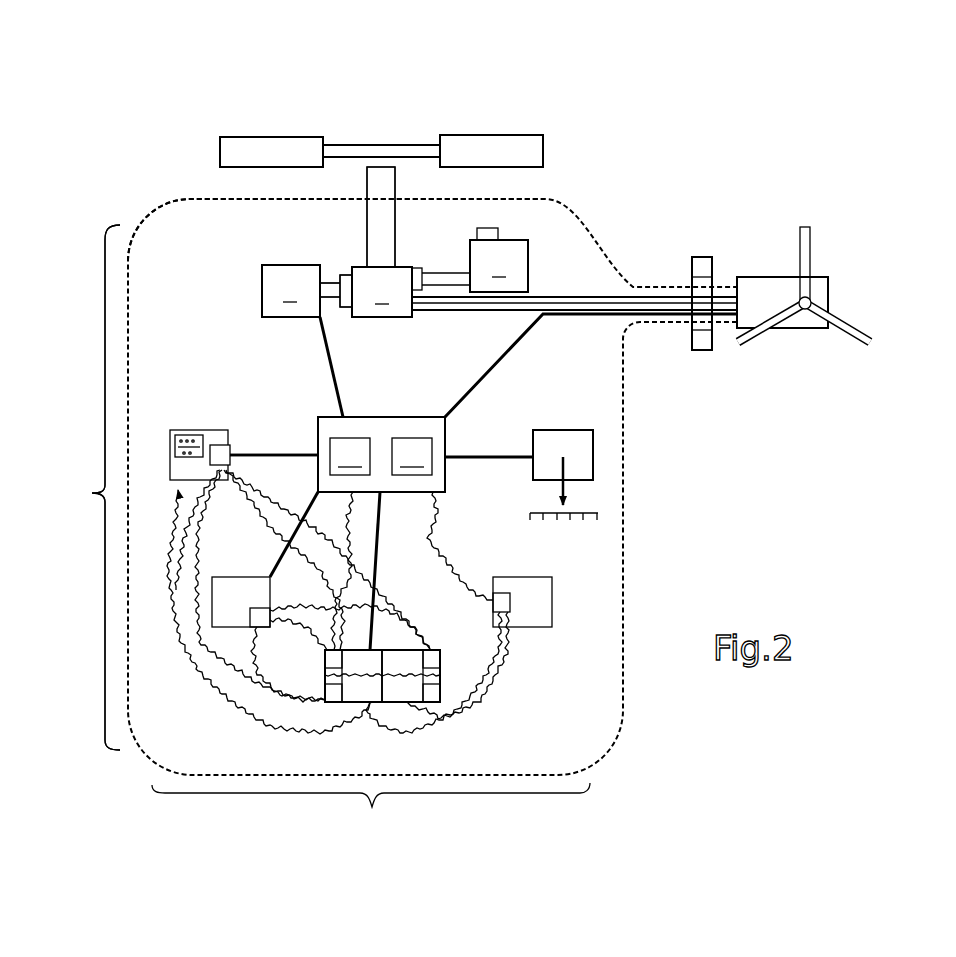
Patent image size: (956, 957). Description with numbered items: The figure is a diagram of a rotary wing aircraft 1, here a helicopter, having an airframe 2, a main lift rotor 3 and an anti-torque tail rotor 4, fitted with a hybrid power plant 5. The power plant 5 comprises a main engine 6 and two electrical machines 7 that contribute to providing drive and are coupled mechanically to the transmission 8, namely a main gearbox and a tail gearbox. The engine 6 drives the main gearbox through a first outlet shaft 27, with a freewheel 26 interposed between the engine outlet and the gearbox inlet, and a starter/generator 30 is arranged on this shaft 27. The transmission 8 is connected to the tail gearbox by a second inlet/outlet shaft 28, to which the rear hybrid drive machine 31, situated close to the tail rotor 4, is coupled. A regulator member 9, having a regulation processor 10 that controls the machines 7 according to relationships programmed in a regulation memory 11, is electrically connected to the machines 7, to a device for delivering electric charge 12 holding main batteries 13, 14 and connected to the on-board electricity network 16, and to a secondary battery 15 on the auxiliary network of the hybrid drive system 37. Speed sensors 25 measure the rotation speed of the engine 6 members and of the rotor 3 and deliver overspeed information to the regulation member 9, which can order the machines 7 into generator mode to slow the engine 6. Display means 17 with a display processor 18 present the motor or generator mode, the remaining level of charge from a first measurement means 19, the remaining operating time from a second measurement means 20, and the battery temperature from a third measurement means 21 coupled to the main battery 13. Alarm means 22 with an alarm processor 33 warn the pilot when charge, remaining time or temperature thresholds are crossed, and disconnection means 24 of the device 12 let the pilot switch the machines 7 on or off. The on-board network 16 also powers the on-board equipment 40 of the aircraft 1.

The rotary wing aircraft 1 is at (608, 172).
The airframe 2 is at (624, 385).
The main lift rotor 3 is at (247, 132).
The anti-torque tail rotor 4 is at (840, 350).
The power plant 5 is at (106, 487).
The engine 6 is at (499, 266).
The electrical machines 7 is at (307, 291).
The transmission 8 is at (828, 277).
The regulator member 9 is at (403, 417).
The regulation processor 10 is at (350, 456).
The regulation memory 11 is at (412, 456).
The device for delivering electric charge 12 is at (352, 708).
The main battery 13 is at (357, 660).
The main battery 14 is at (435, 678).
The secondary battery 15 is at (556, 440).
The on-board electricity network 16 is at (563, 517).
The display means 17 is at (188, 430).
The display processor 18 is at (220, 445).
The first measurement means 19 is at (322, 659).
The second measurement means 20 is at (330, 521).
The third measurement means 21 is at (330, 702).
The alarm means 22 is at (230, 617).
The disconnection means 24 is at (547, 608).
The speed sensors 25 is at (367, 257).
The freewheel 26 is at (417, 267).
The first outlet shaft 27 is at (330, 300).
The second inlet/outlet shaft 28 is at (460, 311).
The electric starter with generator function 30 is at (262, 288).
The hybrid drive machine 31 is at (703, 255).
The alarm processor 33 is at (76, 487).
The hybrid drive system 37 is at (140, 212).
The on-board equipment 40 is at (201, 588).